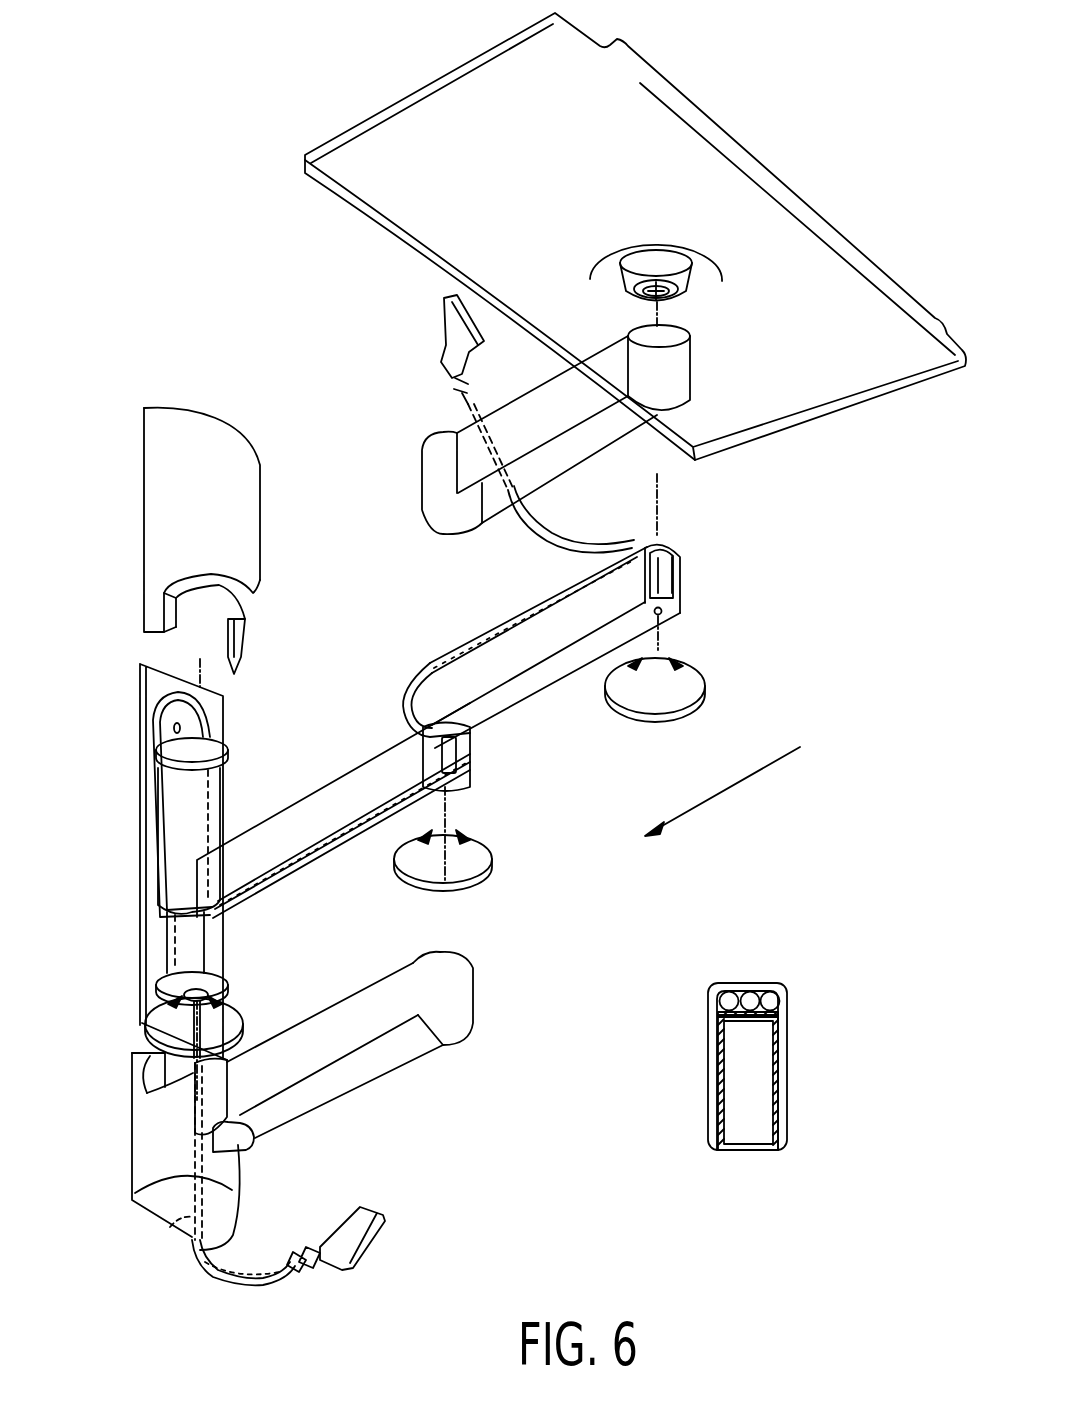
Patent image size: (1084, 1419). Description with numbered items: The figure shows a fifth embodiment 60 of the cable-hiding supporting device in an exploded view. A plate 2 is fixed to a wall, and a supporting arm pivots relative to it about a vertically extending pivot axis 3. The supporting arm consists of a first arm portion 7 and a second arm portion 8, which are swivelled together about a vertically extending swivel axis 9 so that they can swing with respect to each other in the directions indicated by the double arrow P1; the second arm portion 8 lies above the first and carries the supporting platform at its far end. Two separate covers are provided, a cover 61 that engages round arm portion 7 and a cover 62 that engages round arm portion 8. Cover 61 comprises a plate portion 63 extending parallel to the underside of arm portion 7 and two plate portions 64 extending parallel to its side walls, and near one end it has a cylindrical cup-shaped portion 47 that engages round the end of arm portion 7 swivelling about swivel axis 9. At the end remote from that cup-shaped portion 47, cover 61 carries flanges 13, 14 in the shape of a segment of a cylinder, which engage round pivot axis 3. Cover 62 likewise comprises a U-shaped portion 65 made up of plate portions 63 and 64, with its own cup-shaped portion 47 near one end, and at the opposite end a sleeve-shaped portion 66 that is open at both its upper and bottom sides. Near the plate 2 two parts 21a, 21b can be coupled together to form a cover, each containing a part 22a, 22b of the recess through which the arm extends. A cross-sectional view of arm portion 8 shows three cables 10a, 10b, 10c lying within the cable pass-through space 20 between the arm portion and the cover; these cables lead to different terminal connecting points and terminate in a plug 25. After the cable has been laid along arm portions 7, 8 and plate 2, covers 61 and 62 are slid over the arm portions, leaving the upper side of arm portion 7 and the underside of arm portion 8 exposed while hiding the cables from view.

The plate 2 is at (158, 945).
The pivot axis 3 is at (182, 947).
The arm portion 7 is at (340, 797).
The arm portion 8 is at (540, 679).
The swivel axis 9 is at (445, 815).
The cable 10a is at (729, 990).
The cable 10b is at (755, 990).
The cable 10c is at (773, 990).
The flange 13 is at (218, 1087).
The flange 14 is at (235, 1138).
The cable pass-through space 20 is at (778, 1008).
The cover part 21a is at (176, 484).
The cover part 21b is at (160, 1140).
The recess part 22a is at (172, 632).
The recess part 22b is at (160, 1073).
The plug connector 25 is at (440, 317).
The cup-shaped portion 47 is at (432, 467).
The fifth embodiment 60 is at (739, 783).
The cover 61 is at (359, 1093).
The cover 62 is at (570, 446).
The plate portion 63 is at (402, 1049).
The plate portion 64 is at (327, 1035).
The U-shaped portion 65 is at (609, 365).
The sleeve-shaped portion 66 is at (673, 362).
The double arrow P1 is at (492, 862).